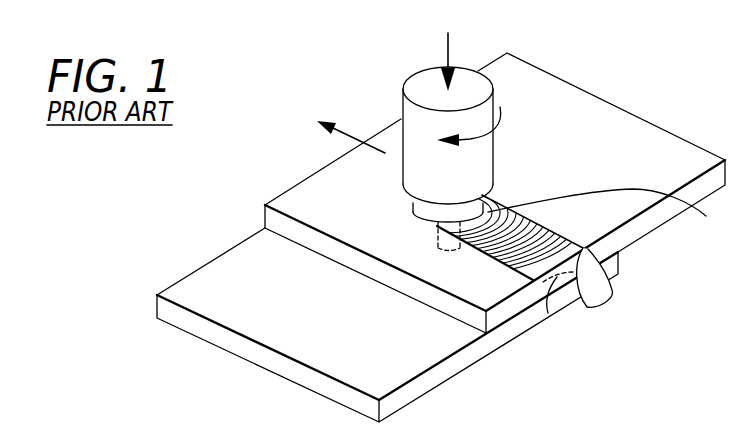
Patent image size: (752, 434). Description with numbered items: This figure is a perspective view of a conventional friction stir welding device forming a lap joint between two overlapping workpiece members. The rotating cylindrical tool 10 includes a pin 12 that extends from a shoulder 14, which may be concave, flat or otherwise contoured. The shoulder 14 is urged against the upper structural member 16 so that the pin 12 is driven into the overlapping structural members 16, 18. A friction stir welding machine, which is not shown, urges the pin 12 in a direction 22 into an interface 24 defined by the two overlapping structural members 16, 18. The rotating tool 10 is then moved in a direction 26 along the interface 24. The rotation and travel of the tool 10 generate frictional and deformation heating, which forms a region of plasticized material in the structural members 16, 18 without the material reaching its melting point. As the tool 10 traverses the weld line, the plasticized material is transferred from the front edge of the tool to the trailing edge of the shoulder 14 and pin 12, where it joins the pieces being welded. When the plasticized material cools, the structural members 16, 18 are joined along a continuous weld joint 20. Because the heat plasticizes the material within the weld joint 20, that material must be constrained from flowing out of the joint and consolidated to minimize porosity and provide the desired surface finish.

The tool 10 is at (420, 70).
The pin 12 is at (437, 238).
The shoulder 14 is at (613, 214).
The structural member 16 is at (650, 122).
The structural member 18 is at (247, 348).
The weld joint 20 is at (568, 298).
The direction 22 is at (450, 50).
The interface 24 is at (592, 270).
The direction 26 is at (349, 134).